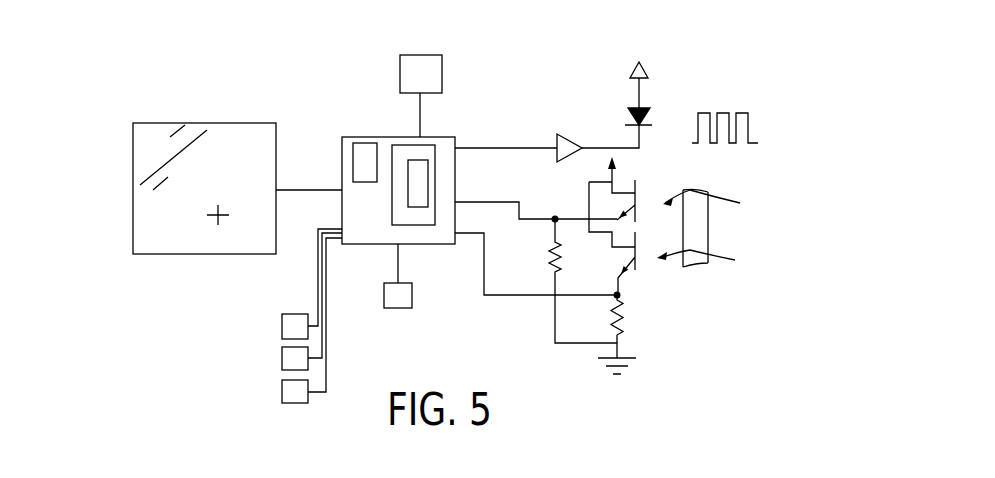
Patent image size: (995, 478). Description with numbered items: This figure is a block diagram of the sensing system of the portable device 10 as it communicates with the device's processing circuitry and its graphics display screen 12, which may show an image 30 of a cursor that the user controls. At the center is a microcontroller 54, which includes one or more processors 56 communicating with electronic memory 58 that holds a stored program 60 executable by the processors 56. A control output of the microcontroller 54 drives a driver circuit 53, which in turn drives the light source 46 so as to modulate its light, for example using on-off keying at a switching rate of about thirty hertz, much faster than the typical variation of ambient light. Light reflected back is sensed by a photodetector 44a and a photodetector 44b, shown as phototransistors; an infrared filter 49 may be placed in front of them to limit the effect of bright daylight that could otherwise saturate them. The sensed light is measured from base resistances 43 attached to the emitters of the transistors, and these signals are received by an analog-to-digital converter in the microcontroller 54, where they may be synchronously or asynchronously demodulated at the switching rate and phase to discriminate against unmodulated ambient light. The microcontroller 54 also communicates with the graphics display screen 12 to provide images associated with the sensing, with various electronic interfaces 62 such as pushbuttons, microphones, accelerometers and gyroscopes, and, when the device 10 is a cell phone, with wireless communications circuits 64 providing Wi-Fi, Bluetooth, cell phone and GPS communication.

The portable device 10 is at (176, 85).
The graphics display screen 12 is at (225, 147).
The image of a cursor 30 is at (219, 221).
The electronic interfaces 62 is at (282, 358).
The processors 56 is at (364, 152).
The microcontroller 54 is at (447, 143).
The stored program 60 is at (428, 165).
The electronic memory 58 is at (416, 194).
The wireless communications circuits 64 is at (393, 308).
The driver circuit 53 is at (567, 137).
The light source 46 is at (641, 113).
The photodetector 44a is at (640, 185).
The photodetector 44b is at (643, 262).
The infrared filter 49 is at (704, 262).
The base resistances 43 is at (608, 317).